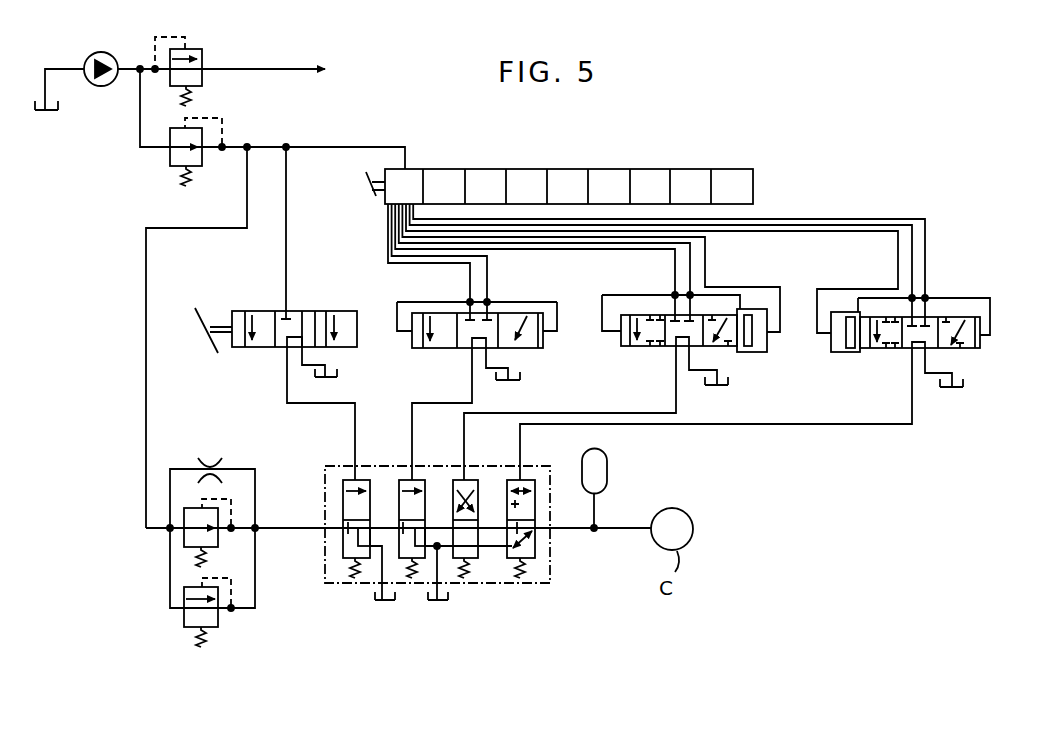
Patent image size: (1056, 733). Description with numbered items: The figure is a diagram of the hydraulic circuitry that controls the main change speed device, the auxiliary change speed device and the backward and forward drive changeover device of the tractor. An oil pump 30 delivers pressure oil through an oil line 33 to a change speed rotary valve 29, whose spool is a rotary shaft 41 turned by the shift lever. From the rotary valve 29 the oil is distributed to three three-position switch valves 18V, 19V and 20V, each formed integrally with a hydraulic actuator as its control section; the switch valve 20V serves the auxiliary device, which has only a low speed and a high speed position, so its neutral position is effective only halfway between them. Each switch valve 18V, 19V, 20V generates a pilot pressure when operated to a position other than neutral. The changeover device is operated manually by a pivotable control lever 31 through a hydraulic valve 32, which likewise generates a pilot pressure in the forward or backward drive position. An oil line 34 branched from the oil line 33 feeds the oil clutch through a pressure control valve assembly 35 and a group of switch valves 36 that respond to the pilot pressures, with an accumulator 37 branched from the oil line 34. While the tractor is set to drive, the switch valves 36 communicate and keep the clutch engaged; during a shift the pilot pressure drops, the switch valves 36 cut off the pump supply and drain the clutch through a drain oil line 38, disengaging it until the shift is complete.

The change speed rotary valve 29 is at (736, 169).
The oil pump 30 is at (101, 87).
The pivotable control lever 31 is at (201, 306).
The hydraulic valve 32 is at (262, 311).
The oil line 33 is at (318, 146).
The oil line 34 is at (146, 364).
The pressure control valve assembly 35 is at (166, 579).
The group of switch valves 36 is at (485, 585).
The accumulator 37 is at (608, 460).
The drain oil line 38 is at (432, 589).
The rotary shaft 41 is at (375, 199).
The three position switch valve 18V is at (980, 345).
The three position switch valve 19V is at (620, 337).
The three position switch valve 20V is at (411, 338).